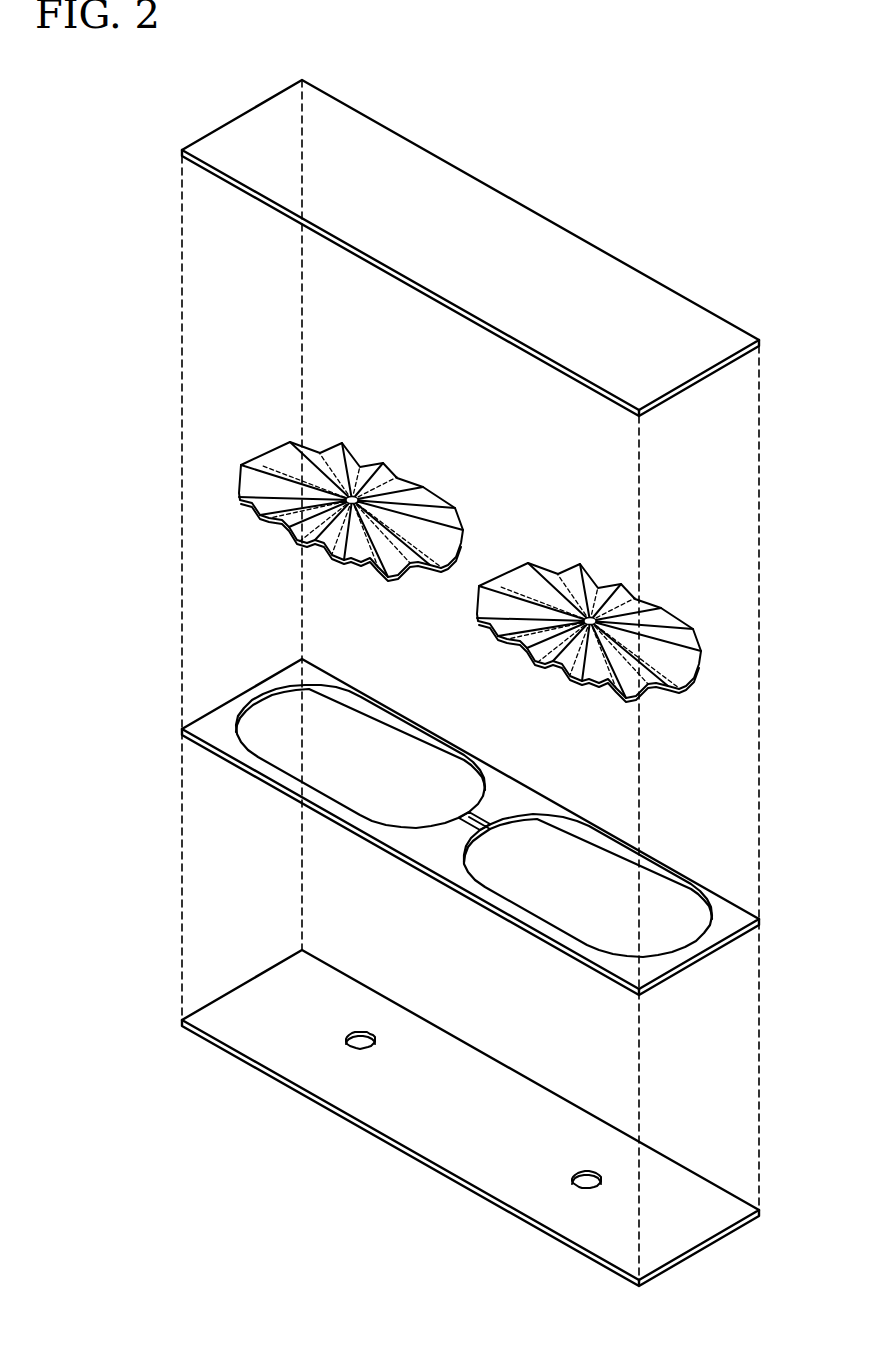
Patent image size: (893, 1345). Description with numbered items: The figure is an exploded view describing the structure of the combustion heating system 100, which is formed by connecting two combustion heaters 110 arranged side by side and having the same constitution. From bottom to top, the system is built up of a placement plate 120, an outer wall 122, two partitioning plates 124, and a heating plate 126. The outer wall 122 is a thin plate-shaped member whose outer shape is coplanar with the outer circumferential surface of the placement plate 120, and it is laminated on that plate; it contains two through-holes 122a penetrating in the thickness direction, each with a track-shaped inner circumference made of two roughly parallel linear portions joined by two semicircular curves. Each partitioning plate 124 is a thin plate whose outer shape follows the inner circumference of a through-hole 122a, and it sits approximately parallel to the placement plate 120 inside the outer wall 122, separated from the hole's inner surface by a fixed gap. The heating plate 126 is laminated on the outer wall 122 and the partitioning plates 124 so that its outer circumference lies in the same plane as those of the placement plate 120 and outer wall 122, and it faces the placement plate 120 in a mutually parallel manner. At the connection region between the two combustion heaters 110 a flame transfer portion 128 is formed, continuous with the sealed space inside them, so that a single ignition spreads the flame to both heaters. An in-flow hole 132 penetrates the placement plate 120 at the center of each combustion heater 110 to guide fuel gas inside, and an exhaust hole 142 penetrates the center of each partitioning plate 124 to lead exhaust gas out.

The combustion heating system 100 is at (626, 183).
The combustion heater 110 is at (478, 121).
The placement plate 120 is at (470, 1118).
The outer wall 122 is at (470, 827).
The through-hole 122a is at (406, 728).
The partitioning plate 124 is at (467, 554).
The heating plate 126 is at (697, 303).
The flame transfer portion 128 is at (485, 824).
The in-flow hole 132 is at (347, 1036).
The exhaust hole 142 is at (357, 492).